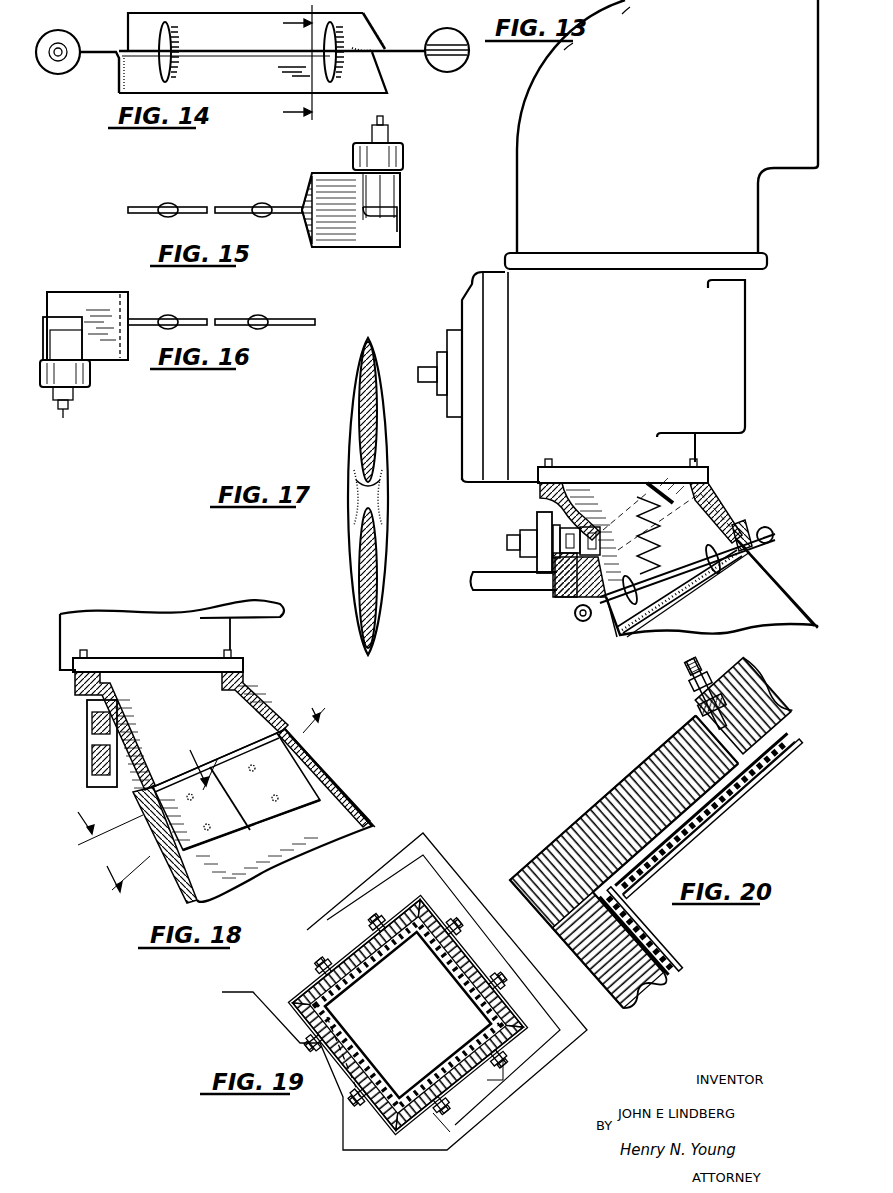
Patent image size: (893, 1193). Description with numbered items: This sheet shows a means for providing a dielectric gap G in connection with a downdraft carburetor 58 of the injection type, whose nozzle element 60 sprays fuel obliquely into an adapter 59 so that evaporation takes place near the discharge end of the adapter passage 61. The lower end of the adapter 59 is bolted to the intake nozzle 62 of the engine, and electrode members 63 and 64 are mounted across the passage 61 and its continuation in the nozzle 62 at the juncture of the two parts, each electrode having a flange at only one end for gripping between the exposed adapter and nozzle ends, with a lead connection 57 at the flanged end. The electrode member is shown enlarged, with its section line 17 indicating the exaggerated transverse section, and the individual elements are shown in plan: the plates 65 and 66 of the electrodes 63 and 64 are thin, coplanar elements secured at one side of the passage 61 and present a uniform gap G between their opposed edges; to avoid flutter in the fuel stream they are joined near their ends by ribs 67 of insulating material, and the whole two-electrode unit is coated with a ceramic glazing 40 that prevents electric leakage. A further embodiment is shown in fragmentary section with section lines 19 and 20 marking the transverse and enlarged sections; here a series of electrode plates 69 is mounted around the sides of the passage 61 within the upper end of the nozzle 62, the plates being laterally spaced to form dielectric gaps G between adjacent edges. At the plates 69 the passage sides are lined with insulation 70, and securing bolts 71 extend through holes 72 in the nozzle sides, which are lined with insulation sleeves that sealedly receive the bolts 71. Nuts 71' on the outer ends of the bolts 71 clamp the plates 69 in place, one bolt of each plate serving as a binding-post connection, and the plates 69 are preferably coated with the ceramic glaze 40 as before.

In FIG. 17, the ceramic glazing 40 is at (360, 378).
In FIG. 14, the lead connection 57 is at (52, 76).
In FIG. 15, the lead connection 57 is at (403, 153).
In FIG. 13, the lead connection 57 is at (573, 617).
In FIG. 13, the downdraft carburetor 58 is at (497, 238).
In FIG. 18, the downdraft carburetor 58 is at (246, 631).
In FIG. 13, the adapter 59 is at (722, 497).
In FIG. 18, the adapter 59 is at (258, 690).
In FIG. 13, the nozzle element 60 is at (533, 522).
In FIG. 13, the adapter passage 61 is at (670, 510).
In FIG. 18, the adapter passage 61 is at (200, 707).
In FIG. 13, the intake nozzle 62 is at (790, 580).
In FIG. 18, the intake nozzle 62 is at (340, 780).
In FIG. 14, the electrode member 63 is at (118, 72).
In FIG. 15, the electrode member 63 is at (405, 195).
In FIG. 13, the electrode member 63 is at (733, 510).
In FIG. 14, the electrode member 64 is at (388, 88).
In FIG. 16, the electrode member 64 is at (64, 285).
In FIG. 13, the electrode member 64 is at (712, 580).
In FIG. 14, the plate 65 is at (136, 24).
In FIG. 15, the plate 65 is at (126, 209).
In FIG. 17, the plate 65 is at (378, 416).
In FIG. 16, the plate 66 is at (316, 322).
In FIG. 17, the plate 66 is at (378, 578).
In FIG. 14, the rib 67 is at (330, 82).
In FIG. 15, the rib 67 is at (170, 204).
In FIG. 16, the rib 67 is at (170, 316).
In FIG. 17, the rib 67 is at (382, 470).
In FIG. 18, the electrode plate 69 is at (300, 748).
In FIG. 20, the electrode plate 69 is at (704, 820).
In FIG. 19, the electrode plate 69 is at (400, 950).
In FIG. 18, the insulation 70 is at (318, 760).
In FIG. 20, the insulation 70 is at (690, 988).
In FIG. 19, the insulation 70 is at (486, 946).
In FIG. 20, the securing bolt 71 is at (692, 691).
In FIG. 19, the securing bolt 71 is at (415, 1009).
In FIG. 20, the nut 71' is at (745, 698).
In FIG. 20, the hole 72 is at (700, 716).
In FIG. 14, the dielectric gap G is at (375, 52).
In FIG. 17, the dielectric gap G is at (384, 497).
In FIG. 13, the dielectric gap G is at (690, 587).
In FIG. 18, the dielectric gap G is at (252, 836).
In FIG. 20, the dielectric gap G is at (630, 890).
In FIG. 19, the dielectric gap G is at (372, 962).
In FIG. 14, the section line 17— 17 is at (285, 63).
In FIG. 18, the section line 19— 19 is at (210, 790).
In FIG. 18, the section line 20— 20 is at (138, 788).